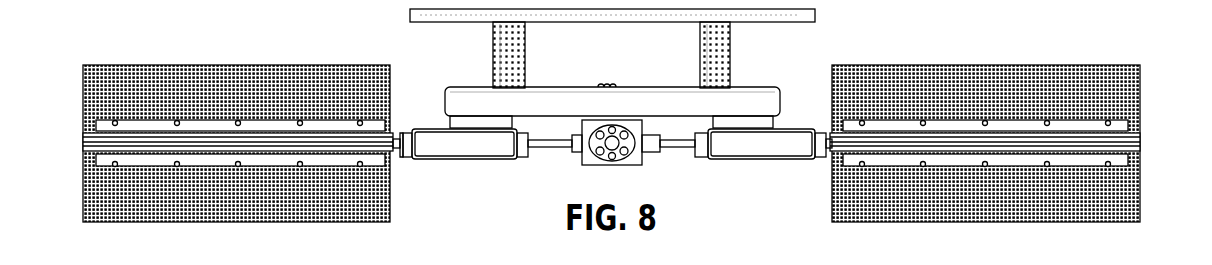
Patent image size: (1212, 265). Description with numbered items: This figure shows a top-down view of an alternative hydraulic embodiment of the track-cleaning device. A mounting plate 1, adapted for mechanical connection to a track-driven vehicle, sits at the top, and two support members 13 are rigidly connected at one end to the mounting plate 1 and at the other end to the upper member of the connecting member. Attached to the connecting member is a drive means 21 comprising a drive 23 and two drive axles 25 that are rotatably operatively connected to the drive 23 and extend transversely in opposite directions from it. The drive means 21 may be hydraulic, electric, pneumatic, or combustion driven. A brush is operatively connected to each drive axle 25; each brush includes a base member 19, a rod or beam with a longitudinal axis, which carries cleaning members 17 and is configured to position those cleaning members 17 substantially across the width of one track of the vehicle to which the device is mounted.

The mounting plate 1 is at (815, 13).
The support member 13 is at (552, 107).
The cleaning member 17 is at (1048, 62).
The base member 19 is at (1132, 133).
The drive means 21 is at (642, 165).
The drive 23 is at (582, 165).
The drive axle 25 is at (546, 152).